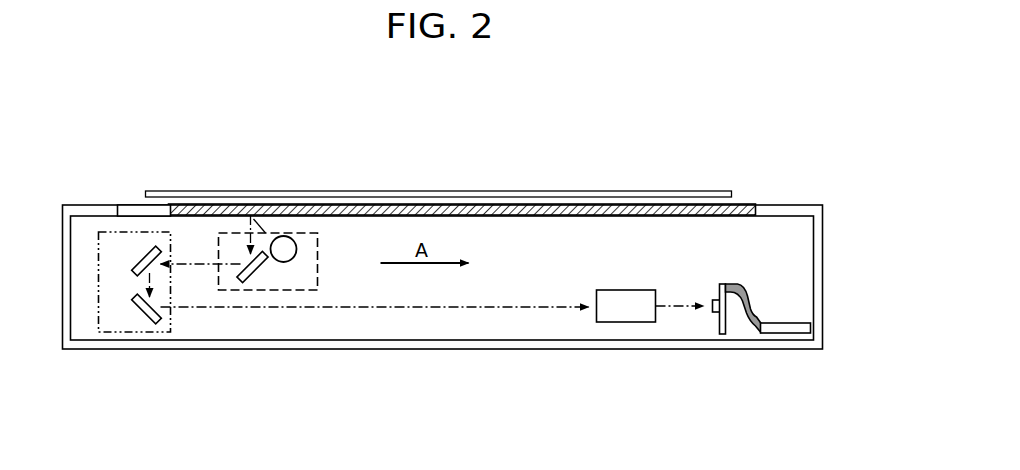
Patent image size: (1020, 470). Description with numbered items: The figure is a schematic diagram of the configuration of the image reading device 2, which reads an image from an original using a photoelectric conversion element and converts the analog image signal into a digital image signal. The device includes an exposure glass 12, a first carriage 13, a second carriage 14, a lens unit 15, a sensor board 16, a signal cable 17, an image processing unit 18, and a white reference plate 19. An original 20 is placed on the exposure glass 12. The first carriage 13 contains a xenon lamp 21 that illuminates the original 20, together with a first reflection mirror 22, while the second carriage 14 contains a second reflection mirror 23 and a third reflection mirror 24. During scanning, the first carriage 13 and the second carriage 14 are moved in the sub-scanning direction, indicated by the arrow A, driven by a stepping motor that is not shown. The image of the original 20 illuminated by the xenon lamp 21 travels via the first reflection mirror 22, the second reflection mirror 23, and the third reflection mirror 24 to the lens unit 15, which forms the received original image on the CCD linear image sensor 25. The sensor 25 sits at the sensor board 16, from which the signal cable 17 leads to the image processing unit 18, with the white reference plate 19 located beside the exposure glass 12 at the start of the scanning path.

The image reading device 2 is at (434, 126).
The exposure glass 12 is at (247, 203).
The first carriage 13 is at (306, 290).
The second carriage 14 is at (111, 332).
The lens unit 15 is at (625, 322).
The sensor board 16 is at (726, 334).
The signal cable 17 is at (743, 283).
The image processing unit 18 is at (796, 333).
The white reference plate 19 is at (122, 204).
The original 20 is at (617, 189).
The xenon lamp 21 is at (284, 235).
The first reflection mirror 22 is at (256, 281).
The second reflection mirror 23 is at (132, 267).
The third reflection mirror 24 is at (153, 322).
The CCD linear image sensor 25 is at (714, 313).